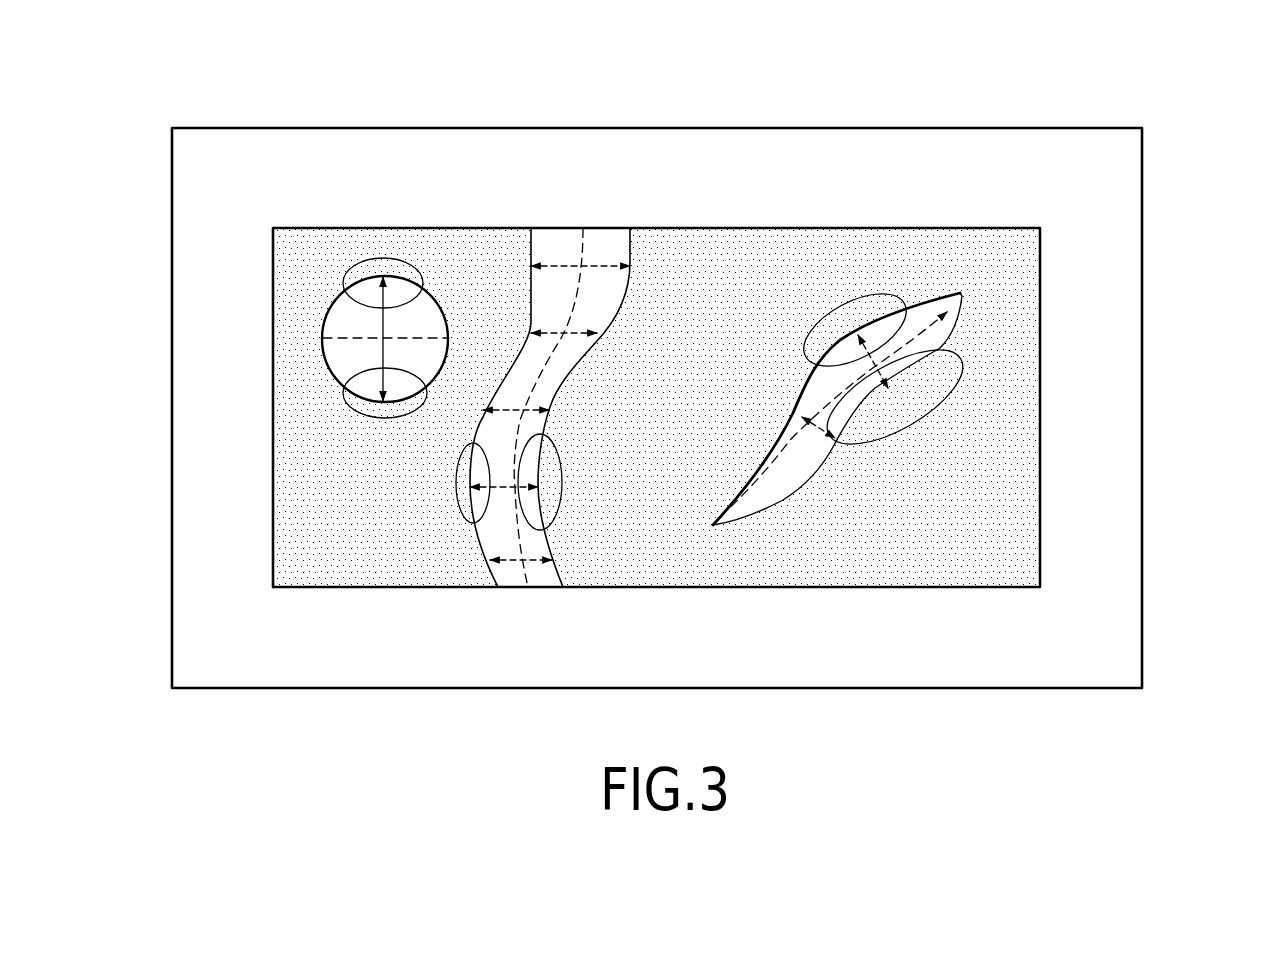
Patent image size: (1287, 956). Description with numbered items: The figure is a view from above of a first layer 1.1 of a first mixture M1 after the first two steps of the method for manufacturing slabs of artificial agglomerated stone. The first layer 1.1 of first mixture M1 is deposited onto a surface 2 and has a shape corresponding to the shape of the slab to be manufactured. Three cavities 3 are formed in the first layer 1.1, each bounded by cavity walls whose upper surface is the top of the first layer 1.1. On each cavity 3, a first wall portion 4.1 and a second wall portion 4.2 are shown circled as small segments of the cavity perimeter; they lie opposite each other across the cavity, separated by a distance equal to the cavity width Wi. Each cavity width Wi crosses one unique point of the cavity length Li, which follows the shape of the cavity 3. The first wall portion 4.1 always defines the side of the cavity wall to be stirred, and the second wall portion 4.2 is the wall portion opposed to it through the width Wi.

The first layer 1.1 is at (1182, 161).
The surface 2 is at (1098, 604).
The cavity 3 is at (950, 302).
The first wall portion 4.1 is at (840, 312).
The second wall portion 4.2 is at (370, 257).
The cavity length Li is at (300, 712).
The cavity width Wi is at (556, 262).
The first mixture M1 is at (656, 407).